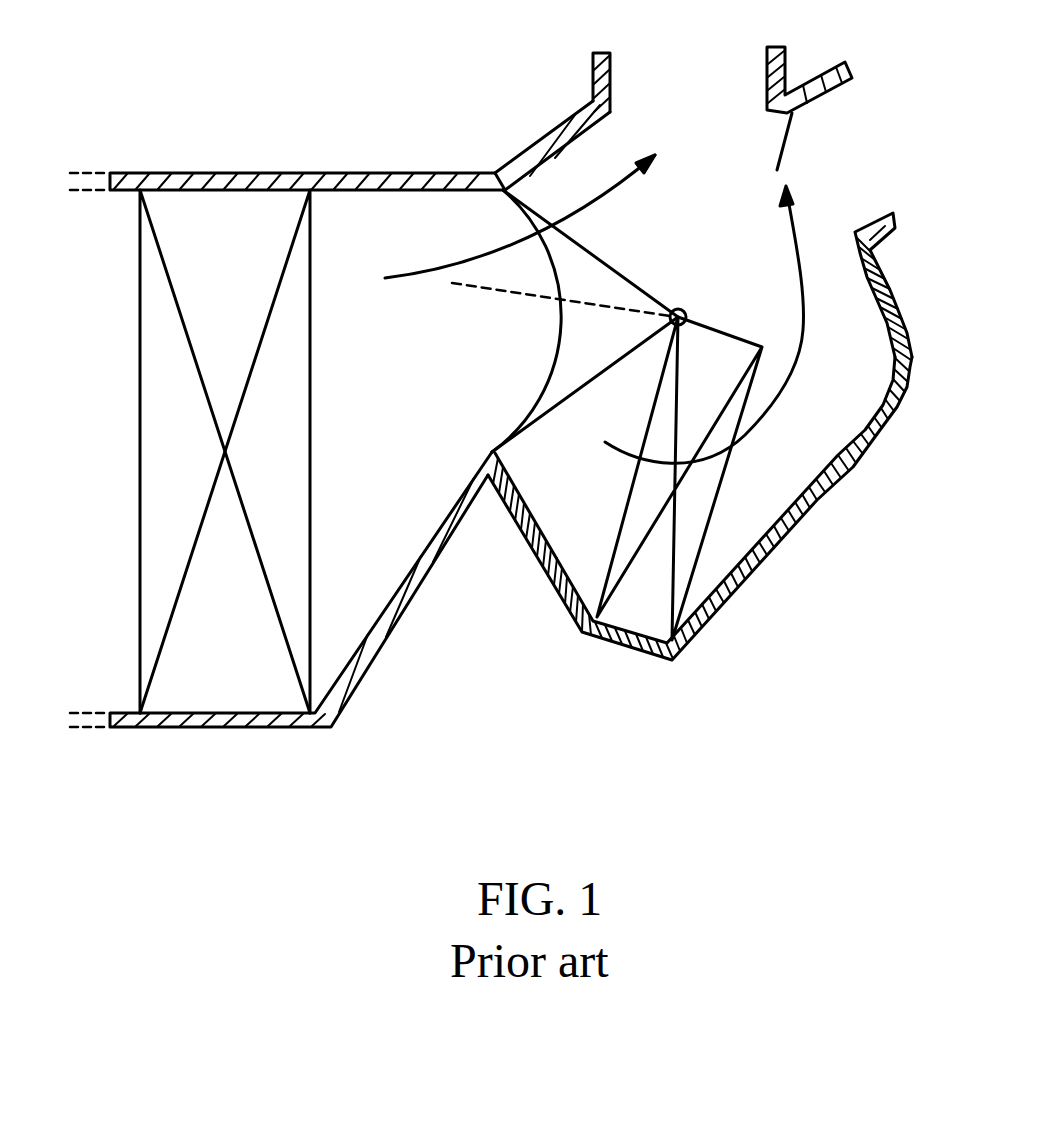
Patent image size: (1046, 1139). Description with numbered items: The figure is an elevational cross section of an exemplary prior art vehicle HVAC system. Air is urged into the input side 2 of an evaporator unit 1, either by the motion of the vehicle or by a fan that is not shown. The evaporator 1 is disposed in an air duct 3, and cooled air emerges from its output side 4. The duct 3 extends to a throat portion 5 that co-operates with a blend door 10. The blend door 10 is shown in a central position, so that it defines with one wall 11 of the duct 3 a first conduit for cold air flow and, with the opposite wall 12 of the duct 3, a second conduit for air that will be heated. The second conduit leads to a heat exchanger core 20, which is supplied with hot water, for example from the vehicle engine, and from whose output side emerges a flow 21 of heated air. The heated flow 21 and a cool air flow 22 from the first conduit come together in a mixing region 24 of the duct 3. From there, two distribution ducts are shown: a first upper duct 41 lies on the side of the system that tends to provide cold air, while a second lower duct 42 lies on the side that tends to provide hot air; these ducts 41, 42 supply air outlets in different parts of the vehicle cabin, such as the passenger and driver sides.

The evaporator unit 1 is at (232, 195).
The input side 2 is at (140, 368).
The air duct 3 is at (380, 647).
The output side 4 is at (312, 405).
The throat portion 5 is at (497, 172).
The blend door 10 is at (560, 305).
The wall of the duct 11 is at (548, 135).
The opposite wall of the duct 12 is at (567, 605).
The heat exchanger core 20 is at (705, 500).
The flow of heated air 21 is at (800, 325).
The cool air flow 22 is at (590, 205).
The mixing region 24 is at (800, 92).
The first upper duct 41 is at (643, 52).
The second lower duct 42 is at (855, 178).